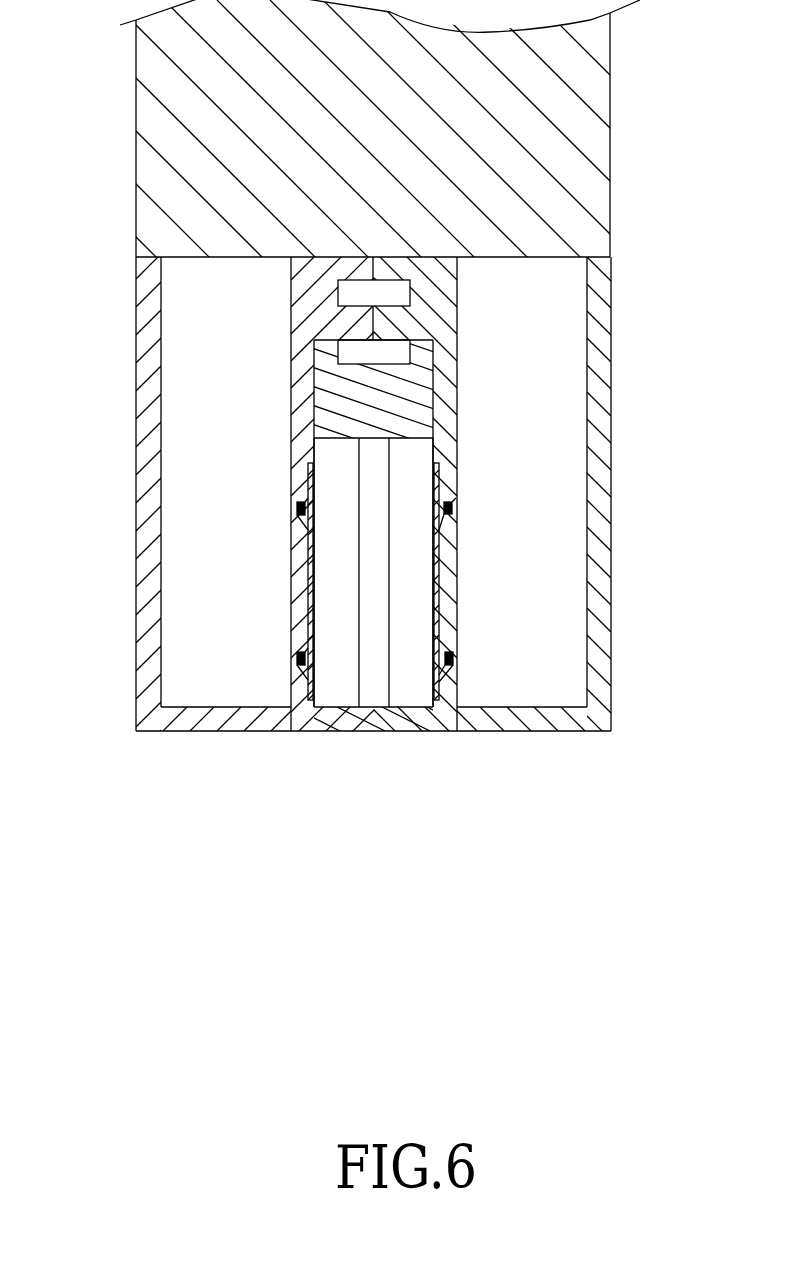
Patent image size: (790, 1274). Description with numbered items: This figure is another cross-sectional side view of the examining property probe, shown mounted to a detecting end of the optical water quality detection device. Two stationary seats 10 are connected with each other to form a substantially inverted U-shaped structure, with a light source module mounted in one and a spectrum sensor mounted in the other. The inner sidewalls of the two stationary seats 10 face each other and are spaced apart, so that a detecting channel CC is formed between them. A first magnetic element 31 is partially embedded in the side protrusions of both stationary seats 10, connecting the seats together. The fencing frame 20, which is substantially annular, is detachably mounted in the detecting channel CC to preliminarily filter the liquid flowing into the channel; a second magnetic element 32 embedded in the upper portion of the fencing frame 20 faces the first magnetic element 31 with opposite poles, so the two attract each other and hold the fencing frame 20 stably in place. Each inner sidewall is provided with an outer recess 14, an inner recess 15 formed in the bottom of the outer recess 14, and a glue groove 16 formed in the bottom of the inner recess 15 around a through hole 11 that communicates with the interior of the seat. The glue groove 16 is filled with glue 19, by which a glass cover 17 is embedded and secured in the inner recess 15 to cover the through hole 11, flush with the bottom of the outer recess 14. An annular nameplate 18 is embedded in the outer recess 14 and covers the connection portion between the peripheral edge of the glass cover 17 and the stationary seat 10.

The stationary seat 10 is at (148, 466).
The through hole 11 is at (298, 522).
The outer recess 14 is at (438, 698).
The inner recess 15 is at (443, 634).
The glue groove 16 is at (447, 652).
The glass cover 17 is at (306, 578).
The nameplate 18 is at (310, 695).
The glue 19 is at (457, 667).
The fencing frame 20 is at (366, 757).
The first magnetic element 31 is at (398, 293).
The second magnetic element 32 is at (396, 355).
The detecting channel CC is at (400, 692).